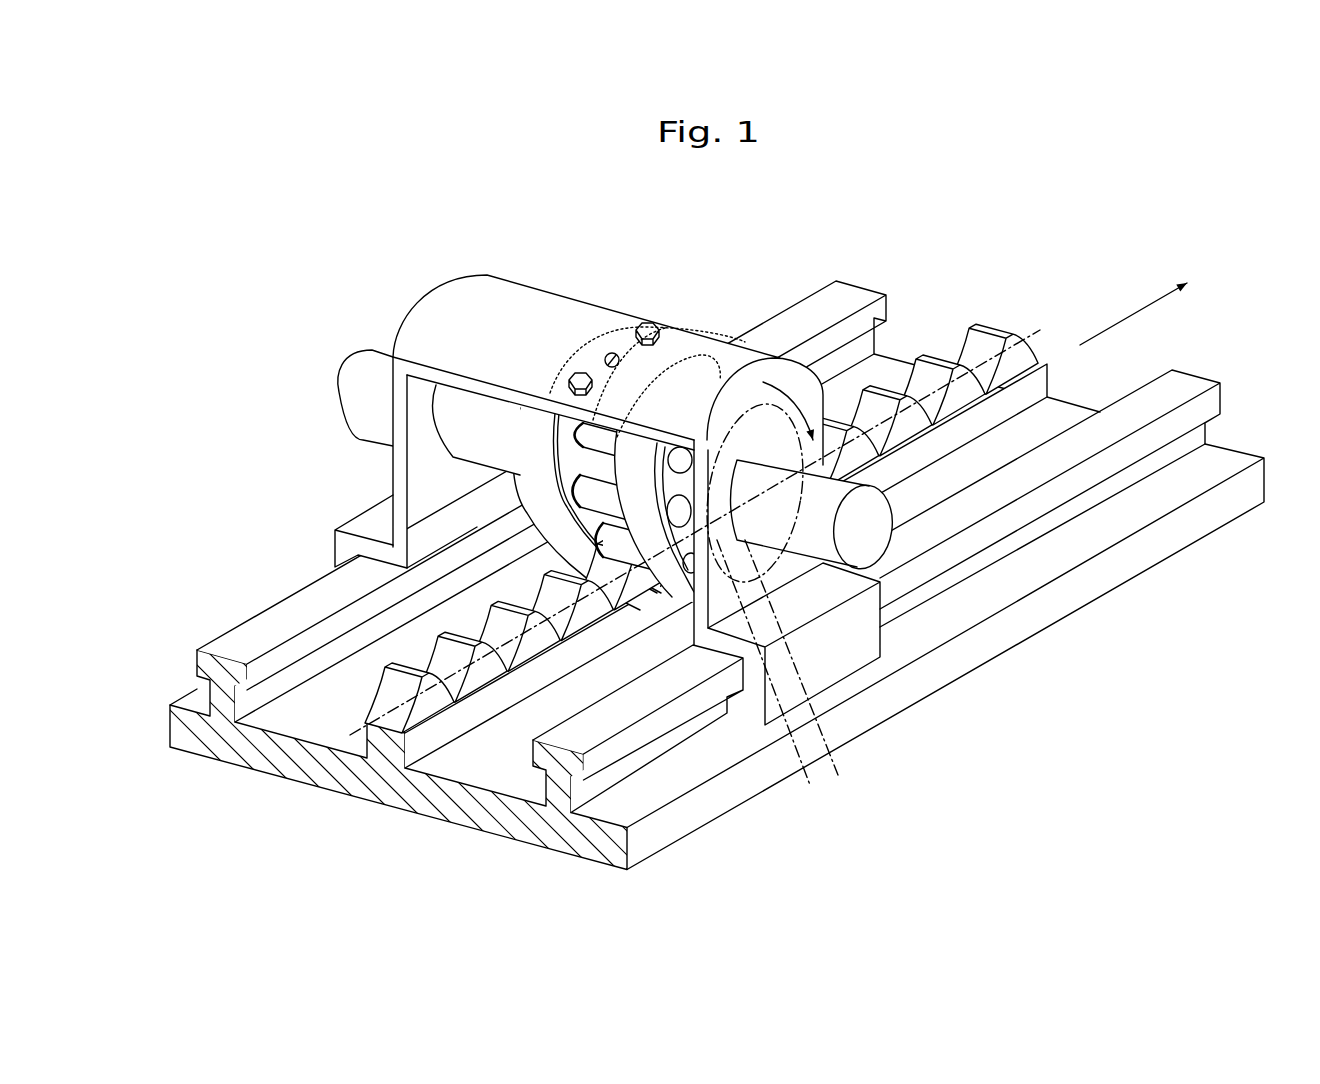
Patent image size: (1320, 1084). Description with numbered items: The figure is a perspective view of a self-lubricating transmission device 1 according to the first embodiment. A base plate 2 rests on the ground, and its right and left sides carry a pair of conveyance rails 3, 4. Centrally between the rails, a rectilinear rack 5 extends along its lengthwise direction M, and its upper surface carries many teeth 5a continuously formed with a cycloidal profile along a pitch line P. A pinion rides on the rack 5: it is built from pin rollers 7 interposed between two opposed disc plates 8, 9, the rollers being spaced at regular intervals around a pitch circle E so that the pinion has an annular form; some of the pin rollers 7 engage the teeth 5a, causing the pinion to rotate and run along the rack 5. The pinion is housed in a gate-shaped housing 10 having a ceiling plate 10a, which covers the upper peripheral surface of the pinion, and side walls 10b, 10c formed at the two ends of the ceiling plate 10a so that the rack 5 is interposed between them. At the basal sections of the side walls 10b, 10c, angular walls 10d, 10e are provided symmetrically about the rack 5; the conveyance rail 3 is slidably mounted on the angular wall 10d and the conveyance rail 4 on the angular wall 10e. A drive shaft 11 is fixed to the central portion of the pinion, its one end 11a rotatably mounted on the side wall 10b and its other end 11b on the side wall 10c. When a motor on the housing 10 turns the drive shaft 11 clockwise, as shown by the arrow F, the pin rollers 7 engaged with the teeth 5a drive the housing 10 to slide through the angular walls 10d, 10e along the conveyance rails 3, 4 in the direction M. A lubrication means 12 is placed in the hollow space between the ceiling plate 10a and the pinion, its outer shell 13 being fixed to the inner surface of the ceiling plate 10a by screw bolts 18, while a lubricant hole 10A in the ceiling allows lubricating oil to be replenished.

The self-lubricating transmission device 1 is at (742, 303).
The base plate 2 is at (1077, 593).
The conveyance rail 3 is at (257, 630).
The conveyance rail 4 is at (667, 690).
The rack 5 is at (485, 680).
The teeth 5a is at (932, 375).
The pin rollers 7 is at (583, 537).
The disc plate 8 is at (533, 448).
The disc plate 9 is at (663, 565).
The housing 10 is at (583, 502).
The ceiling plate 10a is at (547, 307).
The lubricant hole 10A is at (613, 353).
The side wall 10b is at (393, 450).
The side wall 10c is at (717, 560).
The angular wall 10d is at (367, 522).
The angular wall 10e is at (837, 648).
The drive shaft 11 is at (457, 435).
The one end of drive shaft 11a is at (357, 378).
The other end of drive shaft 11b is at (872, 562).
The lubrication means 12 is at (600, 340).
The outer shell 13 is at (670, 340).
The screw bolt 18 is at (580, 383).
The pitch circle E is at (787, 672).
The arrow F is at (788, 404).
The lengthwise direction M is at (1133, 321).
The pitch line P is at (1042, 337).